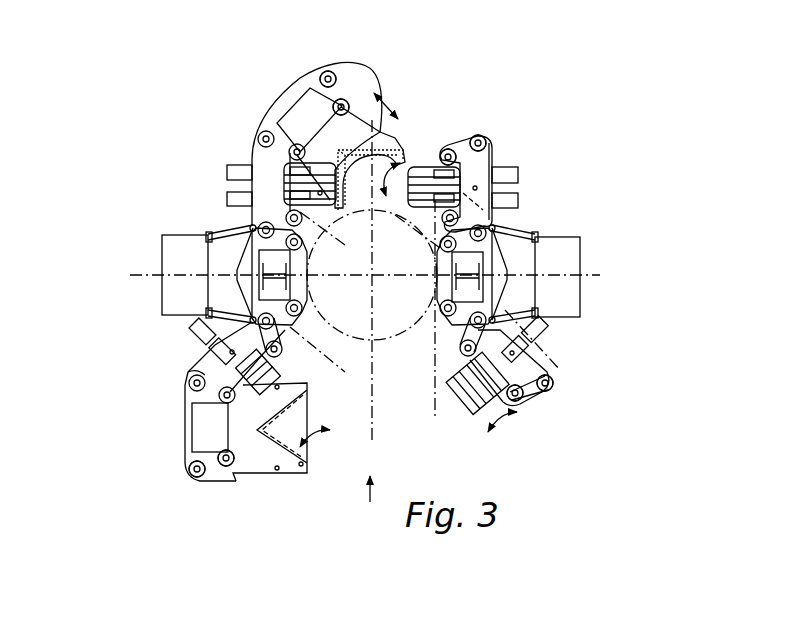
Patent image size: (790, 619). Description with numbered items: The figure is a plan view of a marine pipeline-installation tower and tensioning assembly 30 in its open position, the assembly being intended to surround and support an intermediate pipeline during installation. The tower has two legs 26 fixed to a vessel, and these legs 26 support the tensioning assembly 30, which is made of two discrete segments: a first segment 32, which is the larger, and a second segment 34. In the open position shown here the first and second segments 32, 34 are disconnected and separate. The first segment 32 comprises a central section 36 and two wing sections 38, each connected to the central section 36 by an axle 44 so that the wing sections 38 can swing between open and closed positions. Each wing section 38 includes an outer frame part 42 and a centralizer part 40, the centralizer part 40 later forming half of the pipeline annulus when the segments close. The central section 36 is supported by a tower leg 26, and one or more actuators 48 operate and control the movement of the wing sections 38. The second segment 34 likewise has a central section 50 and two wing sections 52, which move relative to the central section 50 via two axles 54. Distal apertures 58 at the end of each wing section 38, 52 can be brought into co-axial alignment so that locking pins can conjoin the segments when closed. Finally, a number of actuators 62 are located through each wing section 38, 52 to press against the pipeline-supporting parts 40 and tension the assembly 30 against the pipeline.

The tower leg 26 is at (162, 262).
The tensioning assembly 30 is at (232, 526).
The first segment 32 is at (200, 214).
The second segment 34 is at (562, 171).
The central section 36 is at (310, 255).
The wing section 38 is at (297, 92).
The centralizer part 40 is at (393, 142).
The outer frame part 42 is at (264, 124).
The axle 44 is at (250, 222).
The actuator 48 is at (212, 258).
The central section 50 is at (438, 284).
The wing section 52 is at (478, 160).
The axle 54 is at (460, 330).
The distal aperture 58 is at (346, 103).
The actuator 62 is at (518, 200).